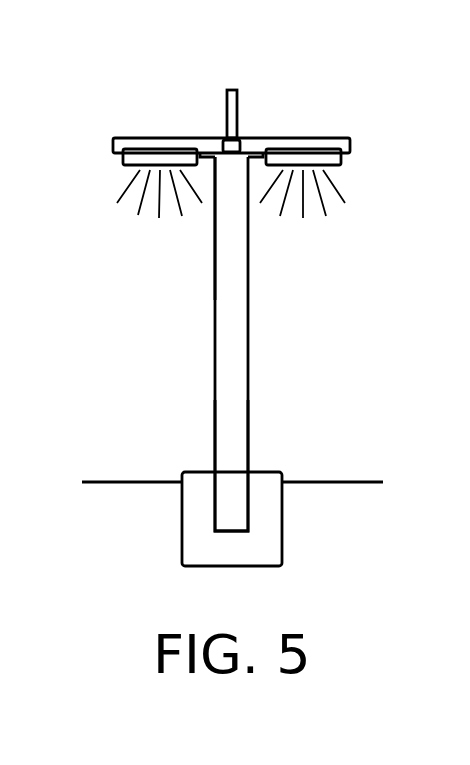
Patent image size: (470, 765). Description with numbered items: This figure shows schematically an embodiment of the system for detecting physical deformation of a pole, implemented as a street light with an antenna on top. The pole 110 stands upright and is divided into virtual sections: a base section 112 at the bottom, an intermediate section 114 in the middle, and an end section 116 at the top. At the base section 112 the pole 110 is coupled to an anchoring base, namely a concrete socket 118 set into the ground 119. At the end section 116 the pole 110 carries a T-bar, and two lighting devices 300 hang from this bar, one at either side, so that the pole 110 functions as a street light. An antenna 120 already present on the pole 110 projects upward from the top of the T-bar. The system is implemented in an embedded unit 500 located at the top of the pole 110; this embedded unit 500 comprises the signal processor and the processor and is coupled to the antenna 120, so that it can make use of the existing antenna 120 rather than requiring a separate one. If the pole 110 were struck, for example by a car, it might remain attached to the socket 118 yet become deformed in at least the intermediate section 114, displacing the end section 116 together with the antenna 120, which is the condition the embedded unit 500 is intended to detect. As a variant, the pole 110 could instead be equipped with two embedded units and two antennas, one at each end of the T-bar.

The pole 110 is at (188, 137).
The base section 112 is at (218, 441).
The intermediate section 114 is at (218, 336).
The end section 116 is at (223, 190).
The socket 118 is at (275, 522).
The ground 119 is at (340, 480).
The antenna 120 is at (235, 97).
The lighting device 300 is at (120, 162).
The embedded unit 500 is at (240, 147).